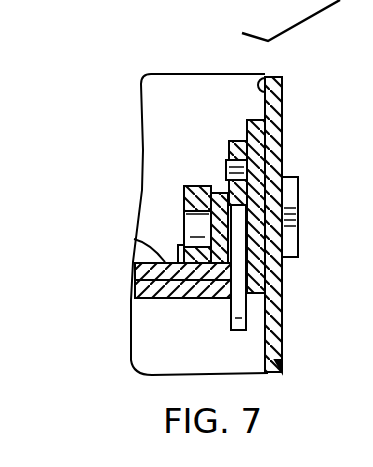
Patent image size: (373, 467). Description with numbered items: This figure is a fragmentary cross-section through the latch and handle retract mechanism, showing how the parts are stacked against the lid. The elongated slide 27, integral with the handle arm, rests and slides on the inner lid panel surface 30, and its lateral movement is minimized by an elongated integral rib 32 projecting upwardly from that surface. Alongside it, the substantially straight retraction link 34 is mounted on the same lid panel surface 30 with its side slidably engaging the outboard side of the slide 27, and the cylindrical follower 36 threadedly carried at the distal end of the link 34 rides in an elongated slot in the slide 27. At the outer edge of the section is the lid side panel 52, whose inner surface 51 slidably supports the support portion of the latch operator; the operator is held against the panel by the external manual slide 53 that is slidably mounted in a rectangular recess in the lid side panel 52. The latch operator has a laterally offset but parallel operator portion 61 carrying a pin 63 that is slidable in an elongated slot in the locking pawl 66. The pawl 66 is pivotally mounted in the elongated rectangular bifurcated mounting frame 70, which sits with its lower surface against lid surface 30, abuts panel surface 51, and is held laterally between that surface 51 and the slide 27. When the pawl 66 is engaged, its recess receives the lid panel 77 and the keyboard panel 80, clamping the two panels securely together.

The slide 27 is at (191, 186).
The inner lid panel surface 30 is at (134, 239).
The rib 32 is at (183, 245).
The retraction link 34 is at (213, 185).
The follower 36 is at (185, 219).
The inner surface 51 is at (262, 76).
The lid side panel 52 is at (272, 118).
The external manual slide 53 is at (283, 200).
The operator portion 61 is at (236, 141).
The pin 63 is at (253, 165).
The locking pawl 66 is at (240, 300).
The mounting frame 70 is at (273, 238).
The lid panel 77 is at (136, 271).
The keyboard panel 80 is at (163, 298).